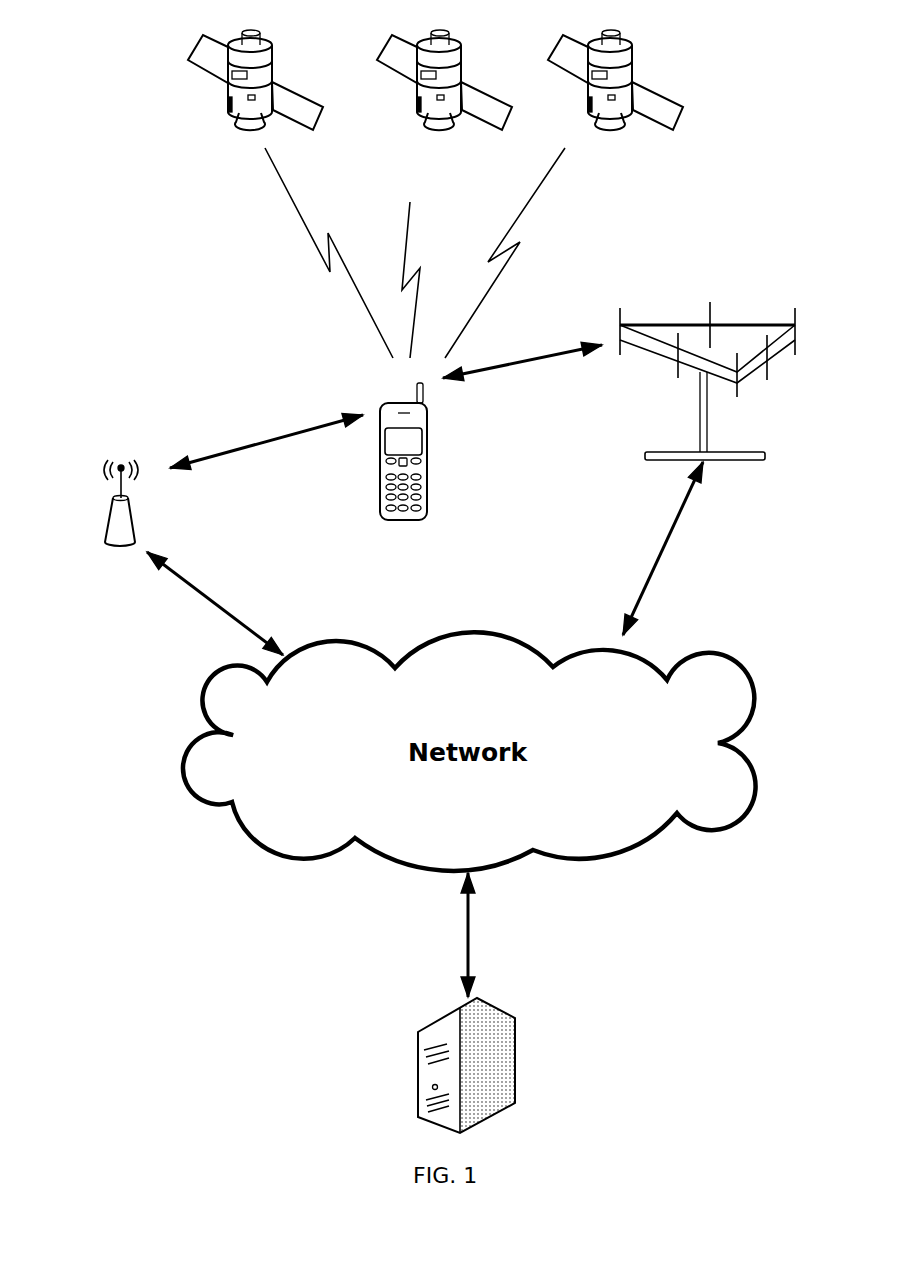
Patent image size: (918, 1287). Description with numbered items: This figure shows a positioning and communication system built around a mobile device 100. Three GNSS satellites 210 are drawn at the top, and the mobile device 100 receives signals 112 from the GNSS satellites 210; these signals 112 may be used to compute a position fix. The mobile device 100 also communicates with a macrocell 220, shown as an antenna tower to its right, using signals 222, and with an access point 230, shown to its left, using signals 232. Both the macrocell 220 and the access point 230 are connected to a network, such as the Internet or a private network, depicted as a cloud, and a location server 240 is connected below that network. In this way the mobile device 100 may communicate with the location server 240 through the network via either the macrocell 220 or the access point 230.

The GNSS satellites 210 is at (164, 90).
The signals 112 is at (410, 230).
The mobile device 100 is at (402, 403).
The signals 222 is at (518, 367).
The macrocell 220 is at (737, 462).
The signals 232 is at (227, 455).
The access point 230 is at (118, 547).
The location server 240 is at (515, 1058).